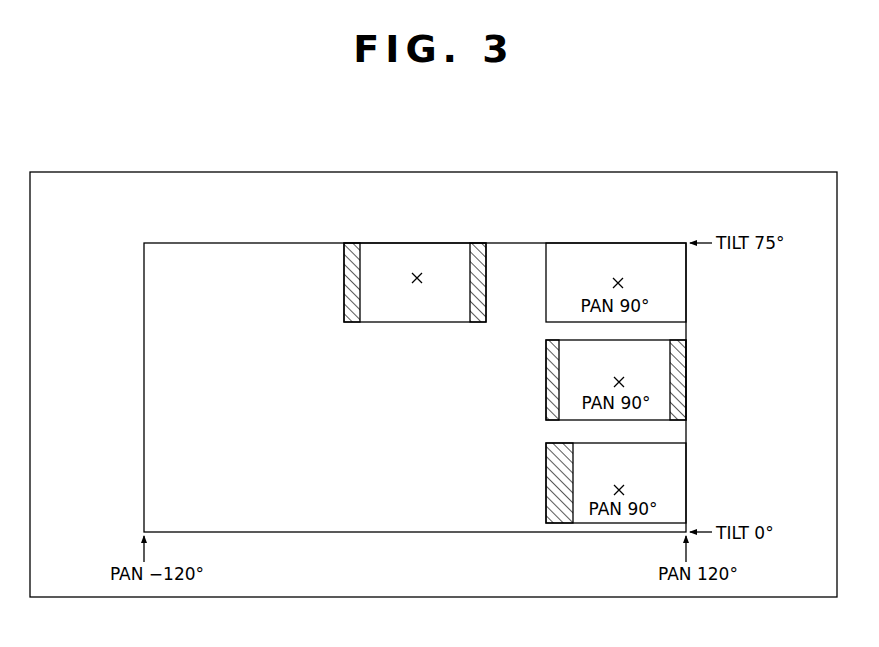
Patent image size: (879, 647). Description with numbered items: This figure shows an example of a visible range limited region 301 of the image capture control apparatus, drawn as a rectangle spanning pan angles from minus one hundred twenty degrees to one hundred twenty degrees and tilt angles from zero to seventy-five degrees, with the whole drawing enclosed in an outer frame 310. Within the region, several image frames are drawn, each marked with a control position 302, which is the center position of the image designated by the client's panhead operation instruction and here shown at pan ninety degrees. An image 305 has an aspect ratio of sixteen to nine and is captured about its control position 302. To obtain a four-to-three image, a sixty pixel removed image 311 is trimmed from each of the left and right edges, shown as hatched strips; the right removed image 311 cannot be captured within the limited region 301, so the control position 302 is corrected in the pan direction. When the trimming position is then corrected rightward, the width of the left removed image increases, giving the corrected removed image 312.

The display screen 310 is at (775, 171).
The visible range limited region 301 is at (335, 534).
The control position 302 is at (417, 271).
The image 305 is at (689, 277).
The removed image 311 is at (681, 368).
The removed image whose trimming position has been corrected 312 is at (548, 508).